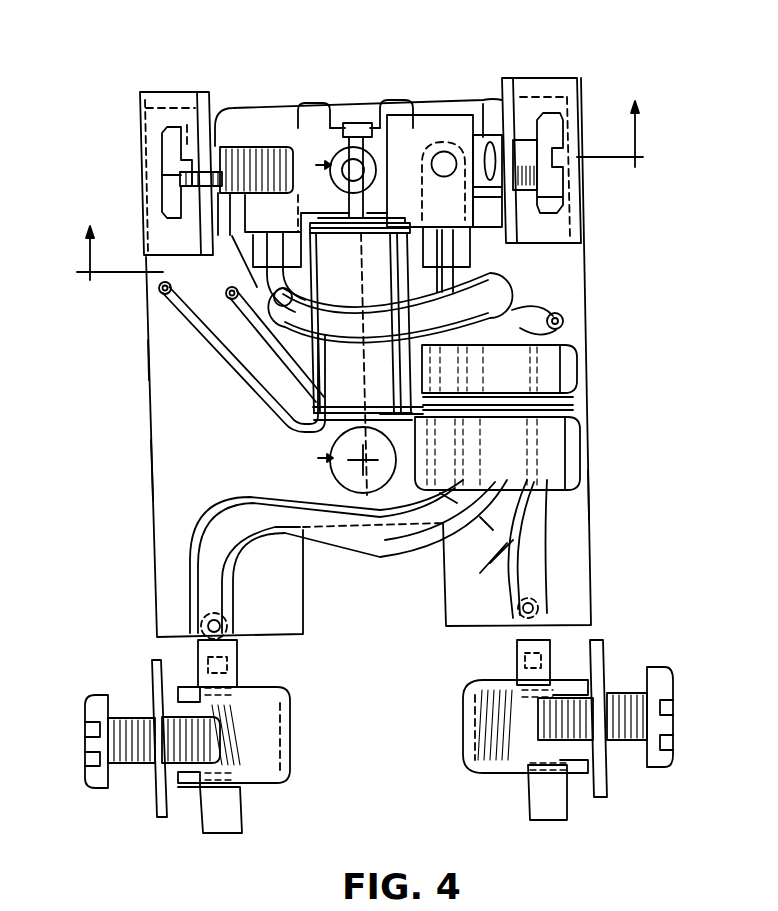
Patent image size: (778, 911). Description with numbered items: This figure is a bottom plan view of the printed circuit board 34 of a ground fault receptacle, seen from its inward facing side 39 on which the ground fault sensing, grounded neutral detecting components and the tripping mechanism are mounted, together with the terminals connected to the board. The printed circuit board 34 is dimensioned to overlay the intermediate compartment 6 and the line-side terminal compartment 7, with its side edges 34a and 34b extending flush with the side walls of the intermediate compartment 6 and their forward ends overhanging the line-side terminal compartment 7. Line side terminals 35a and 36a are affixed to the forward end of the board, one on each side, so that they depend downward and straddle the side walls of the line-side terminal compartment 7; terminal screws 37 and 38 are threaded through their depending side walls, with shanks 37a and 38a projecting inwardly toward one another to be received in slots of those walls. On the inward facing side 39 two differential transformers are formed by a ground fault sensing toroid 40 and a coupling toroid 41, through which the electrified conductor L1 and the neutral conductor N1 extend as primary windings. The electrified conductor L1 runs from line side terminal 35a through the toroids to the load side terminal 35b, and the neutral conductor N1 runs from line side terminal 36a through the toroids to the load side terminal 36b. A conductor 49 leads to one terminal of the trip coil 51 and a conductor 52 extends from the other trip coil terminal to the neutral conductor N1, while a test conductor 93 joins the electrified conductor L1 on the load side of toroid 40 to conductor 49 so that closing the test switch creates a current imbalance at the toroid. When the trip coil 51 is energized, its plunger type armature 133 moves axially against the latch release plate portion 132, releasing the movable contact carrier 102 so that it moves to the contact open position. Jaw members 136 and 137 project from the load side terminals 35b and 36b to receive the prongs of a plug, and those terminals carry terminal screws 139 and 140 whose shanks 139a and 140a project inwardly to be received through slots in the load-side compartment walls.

The printed circuit board 34 is at (147, 422).
The side edge 34a is at (150, 467).
The side edge 34b is at (590, 490).
The intermediate compartment 6 is at (363, 190).
The line-side terminal compartment 7 is at (315, 315).
The line side terminal 36a is at (160, 95).
The terminal screw 38 is at (190, 178).
The shank 38a is at (250, 105).
The movable contact carrier 102 is at (303, 128).
The latch release plate portion 132 is at (378, 128).
The plunger type armature 133 is at (397, 128).
The line side terminal 35a is at (540, 107).
The shank 37a is at (537, 143).
The terminal screw 37 is at (563, 177).
The trip coil 51 is at (370, 387).
The inward facing side 39 is at (163, 360).
The conductor 49 is at (250, 320).
The conductor 52 is at (223, 358).
The conductor 93 is at (572, 292).
The ground fault sensing toroid 40 is at (563, 321).
The coupling toroid 41 is at (563, 442).
The neutral conductor N1 is at (267, 262).
The electrified conductor L1 is at (460, 252).
The jaw member 137 is at (272, 683).
The terminal screw 140 is at (86, 720).
The shank 140a is at (140, 717).
The load side terminal 36b is at (157, 797).
The jaw member 136 is at (510, 777).
The shank 139a is at (629, 700).
The load side terminal 35b is at (607, 777).
The terminal screw 139 is at (650, 727).